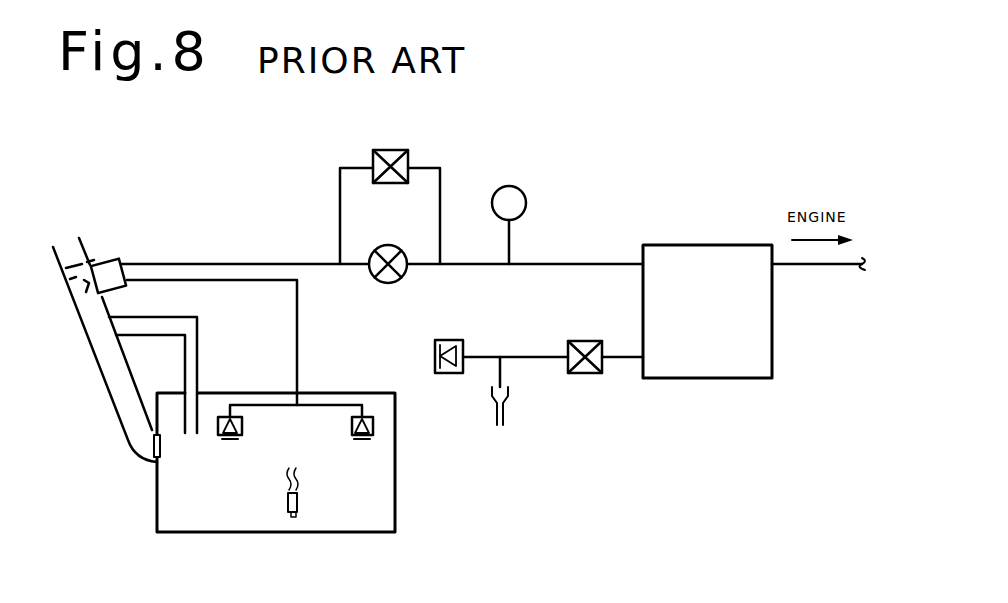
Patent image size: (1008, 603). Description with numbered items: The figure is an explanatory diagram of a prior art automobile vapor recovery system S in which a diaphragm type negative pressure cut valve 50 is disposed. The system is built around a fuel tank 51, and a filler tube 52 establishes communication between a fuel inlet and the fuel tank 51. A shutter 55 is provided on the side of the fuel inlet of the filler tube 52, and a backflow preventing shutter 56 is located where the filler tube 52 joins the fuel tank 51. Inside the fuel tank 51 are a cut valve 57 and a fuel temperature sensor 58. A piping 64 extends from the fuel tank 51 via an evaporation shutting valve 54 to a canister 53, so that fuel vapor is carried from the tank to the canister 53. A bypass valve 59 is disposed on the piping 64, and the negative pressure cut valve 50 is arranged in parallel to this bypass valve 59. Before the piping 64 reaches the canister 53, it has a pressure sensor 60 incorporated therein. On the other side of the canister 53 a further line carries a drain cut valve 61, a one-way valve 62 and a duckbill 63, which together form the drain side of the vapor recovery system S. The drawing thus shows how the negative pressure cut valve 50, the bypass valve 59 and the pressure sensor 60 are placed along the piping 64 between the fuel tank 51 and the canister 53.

The negative pressure cut valve 50 is at (390, 246).
The fuel tank 51 is at (395, 515).
The filler tube 52 is at (108, 380).
The canister 53 is at (772, 328).
The evaporation shutting valve 54 is at (106, 258).
The shutter 55 is at (72, 277).
The backflow preventing shutter 56 is at (143, 443).
The cut valve 57 is at (218, 424).
The fuel temperature sensor 58 is at (285, 500).
The bypass valve 59 is at (398, 150).
The pressure sensor 60 is at (524, 191).
The drain cut valve 61 is at (595, 375).
The one-way valve 62 is at (449, 375).
The duckbill 63 is at (508, 395).
The piping 64 is at (297, 262).
The vapor recovery system S is at (661, 188).